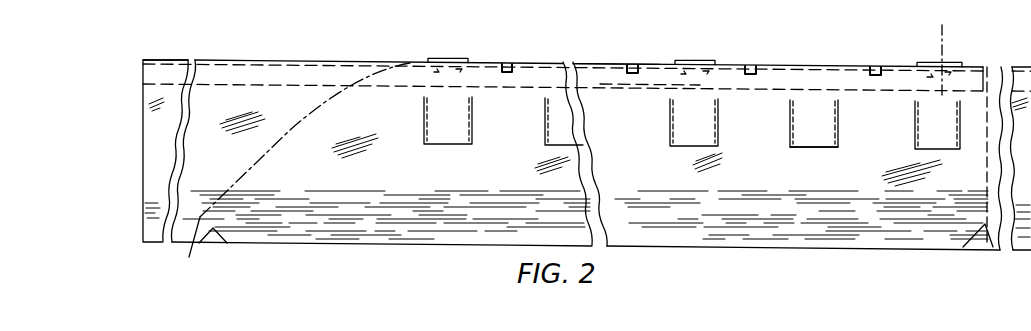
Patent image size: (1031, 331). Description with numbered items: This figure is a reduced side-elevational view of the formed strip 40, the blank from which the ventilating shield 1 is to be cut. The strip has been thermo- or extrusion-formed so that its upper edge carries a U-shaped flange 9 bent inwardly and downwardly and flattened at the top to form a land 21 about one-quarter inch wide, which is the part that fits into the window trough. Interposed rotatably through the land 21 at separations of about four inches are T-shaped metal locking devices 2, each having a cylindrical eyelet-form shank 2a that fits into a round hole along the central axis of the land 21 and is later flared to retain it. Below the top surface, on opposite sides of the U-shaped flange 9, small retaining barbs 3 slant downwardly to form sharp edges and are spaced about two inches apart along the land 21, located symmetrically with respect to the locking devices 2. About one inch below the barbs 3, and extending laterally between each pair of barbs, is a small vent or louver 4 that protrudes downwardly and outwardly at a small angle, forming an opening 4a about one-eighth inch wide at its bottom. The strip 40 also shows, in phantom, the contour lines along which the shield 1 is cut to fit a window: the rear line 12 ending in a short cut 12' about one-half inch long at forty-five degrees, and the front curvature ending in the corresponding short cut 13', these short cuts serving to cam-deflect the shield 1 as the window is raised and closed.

The shield 1 is at (352, 61).
The locking device 2 is at (935, 62).
The shank 2a is at (932, 73).
The retaining barb 3 is at (878, 73).
The louver 4 is at (818, 130).
The opening 4a is at (808, 148).
The U-shaped flange 9 is at (663, 75).
The cut 12 is at (974, 157).
The cut 12' is at (997, 258).
The cut 13' is at (295, 175).
The land 21 is at (597, 63).
The formed strip 40 is at (143, 113).